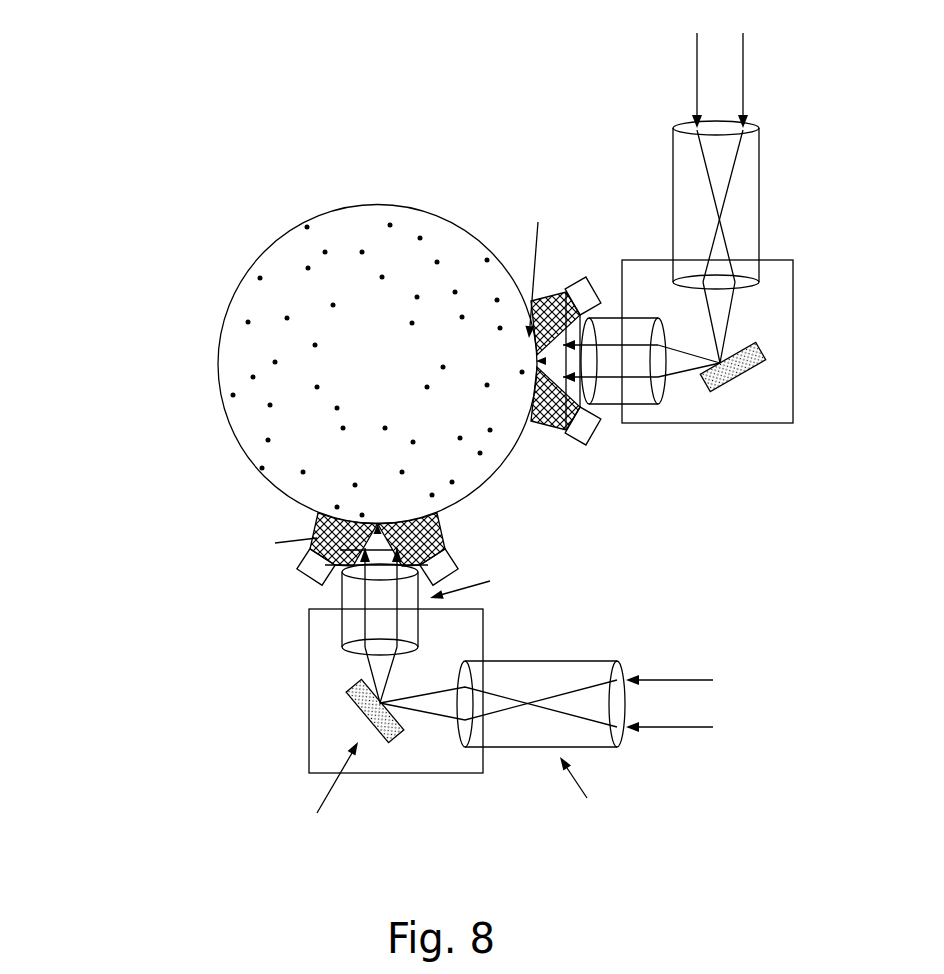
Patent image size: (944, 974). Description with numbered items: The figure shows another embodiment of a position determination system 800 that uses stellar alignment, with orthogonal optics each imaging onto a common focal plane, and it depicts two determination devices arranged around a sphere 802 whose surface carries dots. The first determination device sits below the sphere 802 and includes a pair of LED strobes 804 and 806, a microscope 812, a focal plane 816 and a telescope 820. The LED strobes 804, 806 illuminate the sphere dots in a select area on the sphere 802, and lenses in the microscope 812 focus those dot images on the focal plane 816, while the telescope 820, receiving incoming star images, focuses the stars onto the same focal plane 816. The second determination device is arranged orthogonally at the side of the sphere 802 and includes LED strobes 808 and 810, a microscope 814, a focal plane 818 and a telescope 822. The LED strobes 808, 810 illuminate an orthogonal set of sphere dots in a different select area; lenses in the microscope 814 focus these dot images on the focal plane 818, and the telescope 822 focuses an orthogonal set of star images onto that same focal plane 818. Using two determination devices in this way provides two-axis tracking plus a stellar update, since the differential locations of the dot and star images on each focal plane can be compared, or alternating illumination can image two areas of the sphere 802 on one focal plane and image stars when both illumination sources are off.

The position determination system 800 is at (122, 209).
The sphere 802 is at (313, 260).
The LED strobe 804 is at (303, 572).
The LED strobe 806 is at (457, 565).
The LED strobe 808 is at (588, 442).
The LED strobe 810 is at (578, 290).
The microscope 812 is at (353, 620).
The microscope 814 is at (634, 392).
The focal plane 816 is at (350, 693).
The focal plane 818 is at (745, 368).
The telescope 820 is at (532, 732).
The telescope 822 is at (745, 213).